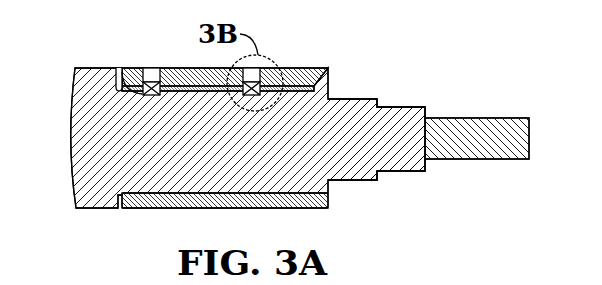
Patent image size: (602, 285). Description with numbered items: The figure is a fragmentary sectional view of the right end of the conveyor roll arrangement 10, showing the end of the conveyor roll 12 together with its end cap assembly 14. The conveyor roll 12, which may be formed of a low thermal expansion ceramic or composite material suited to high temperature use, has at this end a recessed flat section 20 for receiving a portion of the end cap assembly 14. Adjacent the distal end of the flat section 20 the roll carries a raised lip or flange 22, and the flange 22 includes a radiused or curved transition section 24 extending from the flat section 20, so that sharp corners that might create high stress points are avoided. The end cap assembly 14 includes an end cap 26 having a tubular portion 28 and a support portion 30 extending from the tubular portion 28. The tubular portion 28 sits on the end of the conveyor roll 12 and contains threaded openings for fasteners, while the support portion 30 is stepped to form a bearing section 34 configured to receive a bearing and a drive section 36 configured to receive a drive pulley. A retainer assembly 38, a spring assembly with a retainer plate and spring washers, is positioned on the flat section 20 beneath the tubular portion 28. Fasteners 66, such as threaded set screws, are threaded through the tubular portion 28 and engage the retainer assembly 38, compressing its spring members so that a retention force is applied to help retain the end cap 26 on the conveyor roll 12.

The conveyor roll arrangement 10 is at (383, 207).
The conveyor roll 12 is at (97, 215).
The end cap assembly 14 is at (441, 143).
The flat section 20 is at (183, 68).
The flange 22 is at (315, 84).
The curved transition section 24 is at (281, 68).
The end cap 26 is at (432, 63).
The tubular portion 28 is at (163, 210).
The support portion 30 is at (452, 95).
The bearing section 34 is at (397, 107).
The drive section 36 is at (508, 162).
The retainer assembly 38 is at (117, 72).
The fastener 66 is at (152, 68).